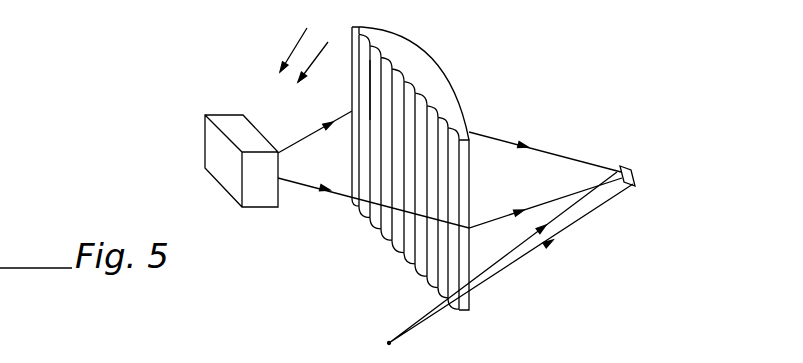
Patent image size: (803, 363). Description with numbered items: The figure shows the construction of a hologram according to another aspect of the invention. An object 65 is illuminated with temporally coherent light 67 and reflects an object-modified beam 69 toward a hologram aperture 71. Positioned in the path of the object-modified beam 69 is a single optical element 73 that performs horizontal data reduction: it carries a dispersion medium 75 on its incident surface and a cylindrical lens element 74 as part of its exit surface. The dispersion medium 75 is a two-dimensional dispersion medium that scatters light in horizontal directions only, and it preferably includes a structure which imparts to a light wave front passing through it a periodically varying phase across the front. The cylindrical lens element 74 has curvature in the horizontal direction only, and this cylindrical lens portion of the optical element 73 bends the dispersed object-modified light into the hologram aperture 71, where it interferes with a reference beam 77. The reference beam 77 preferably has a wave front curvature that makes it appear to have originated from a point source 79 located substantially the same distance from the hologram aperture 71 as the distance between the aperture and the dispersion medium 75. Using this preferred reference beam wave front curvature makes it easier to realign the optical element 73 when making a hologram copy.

The object 65 is at (228, 122).
The temporally coherent light 67 is at (305, 50).
The object-modified beam 69 is at (302, 168).
The hologram aperture 71 is at (630, 172).
The optical element 73 is at (398, 168).
The cylindrical lens element 74 is at (442, 82).
The dispersion medium 75 is at (372, 88).
The reference beam 77 is at (596, 205).
The point source 79 is at (389, 343).